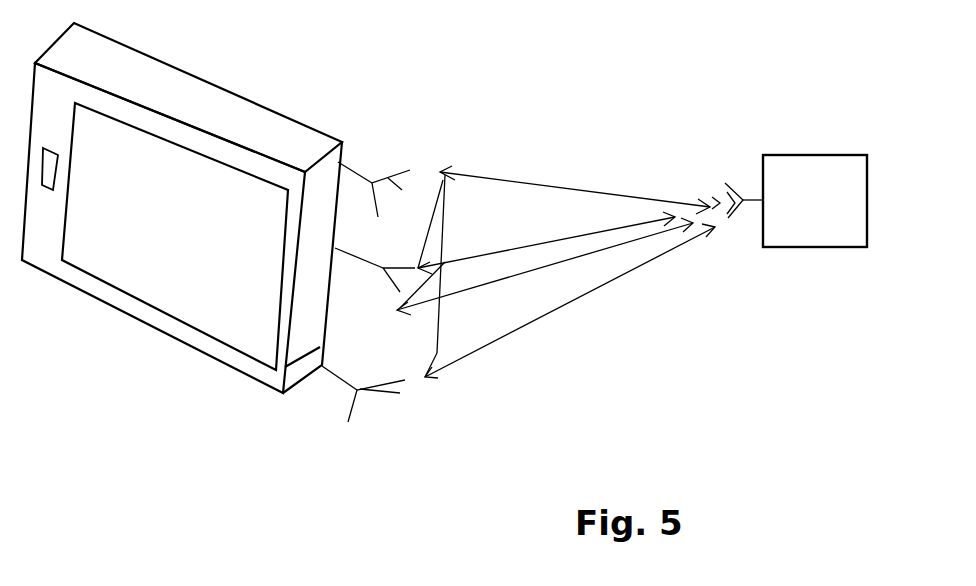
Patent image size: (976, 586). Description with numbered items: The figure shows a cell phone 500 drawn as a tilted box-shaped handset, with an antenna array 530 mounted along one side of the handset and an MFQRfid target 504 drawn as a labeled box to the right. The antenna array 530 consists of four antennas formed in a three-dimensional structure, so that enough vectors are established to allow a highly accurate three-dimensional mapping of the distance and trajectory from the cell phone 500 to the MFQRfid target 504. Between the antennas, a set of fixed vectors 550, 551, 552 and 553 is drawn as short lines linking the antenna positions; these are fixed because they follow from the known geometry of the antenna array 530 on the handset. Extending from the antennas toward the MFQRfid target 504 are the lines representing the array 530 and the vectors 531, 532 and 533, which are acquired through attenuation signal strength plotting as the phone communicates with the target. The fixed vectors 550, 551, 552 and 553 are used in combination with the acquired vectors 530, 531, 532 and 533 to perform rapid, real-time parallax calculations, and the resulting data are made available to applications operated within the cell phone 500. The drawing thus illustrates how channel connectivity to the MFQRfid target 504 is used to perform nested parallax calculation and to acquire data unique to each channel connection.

The cell phone 500 is at (163, 347).
The MFQRfid target 504 is at (818, 252).
The antenna array 530 is at (563, 183).
The acquired vector 531 is at (593, 297).
The acquired vector 532 is at (550, 277).
The acquired vector 533 is at (610, 222).
The fixed vector 550 is at (438, 195).
The fixed vector 551 is at (427, 240).
The fixed vector 552 is at (430, 372).
The fixed vector 553 is at (426, 297).